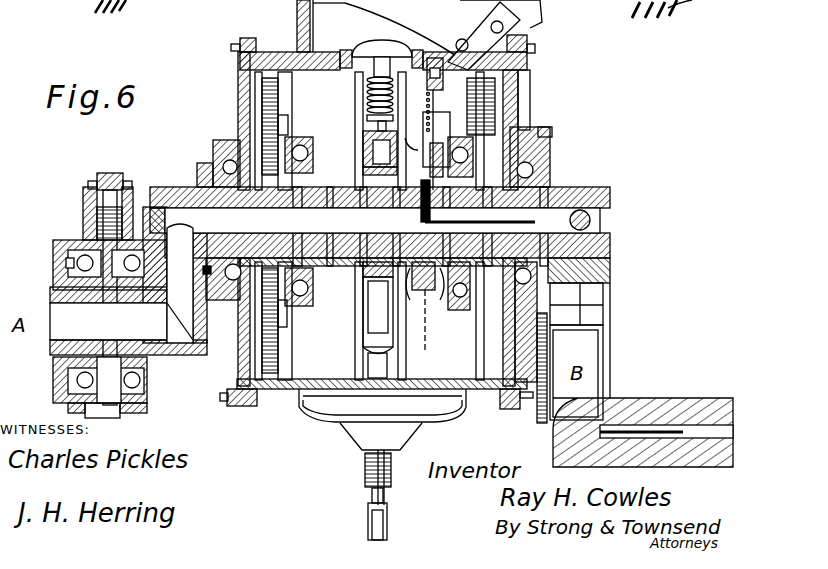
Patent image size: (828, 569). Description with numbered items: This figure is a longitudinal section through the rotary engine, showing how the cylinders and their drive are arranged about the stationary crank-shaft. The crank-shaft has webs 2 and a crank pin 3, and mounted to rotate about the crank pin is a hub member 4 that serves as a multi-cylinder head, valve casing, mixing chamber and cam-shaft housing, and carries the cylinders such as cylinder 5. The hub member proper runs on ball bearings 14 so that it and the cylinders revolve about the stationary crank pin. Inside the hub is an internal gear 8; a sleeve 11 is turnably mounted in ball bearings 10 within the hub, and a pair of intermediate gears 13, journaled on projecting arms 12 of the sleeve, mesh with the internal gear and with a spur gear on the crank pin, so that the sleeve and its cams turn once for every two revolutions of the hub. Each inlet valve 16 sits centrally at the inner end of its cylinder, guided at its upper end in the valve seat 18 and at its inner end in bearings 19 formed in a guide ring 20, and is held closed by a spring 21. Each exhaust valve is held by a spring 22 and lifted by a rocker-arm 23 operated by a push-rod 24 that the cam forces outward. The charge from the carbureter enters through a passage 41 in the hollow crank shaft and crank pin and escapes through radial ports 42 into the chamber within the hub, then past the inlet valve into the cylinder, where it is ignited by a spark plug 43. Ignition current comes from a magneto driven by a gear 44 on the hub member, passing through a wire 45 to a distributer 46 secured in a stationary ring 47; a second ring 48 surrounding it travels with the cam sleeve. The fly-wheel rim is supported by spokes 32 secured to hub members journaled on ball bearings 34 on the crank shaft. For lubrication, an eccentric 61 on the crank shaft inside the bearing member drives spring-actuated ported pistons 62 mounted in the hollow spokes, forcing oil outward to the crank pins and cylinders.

The webs of the shaft 2 is at (195, 358).
The crank pin 3 is at (197, 172).
The hub member 4 is at (240, 103).
The cylinder 5 is at (445, 120).
The internal gear 8 is at (245, 73).
The ball bearings 10 is at (312, 148).
The sleeve 11 is at (355, 170).
The projecting arms 12 is at (284, 125).
The intermediate gears 13 is at (278, 100).
The ball bearings 14 is at (230, 142).
The inlet valve 16 is at (382, 50).
The valve seat 18 is at (346, 52).
The bearings 19 is at (417, 112).
The guide ring 20 is at (365, 140).
The spring 21 is at (368, 104).
The spring 22 is at (389, 470).
The rocker-arm 23 is at (528, 20).
The push-rod 24 is at (372, 500).
The spokes 32 is at (122, 412).
The ball bearings 34 is at (55, 271).
The passage 41 is at (160, 283).
The ports 42 is at (268, 214).
The spark plug 43 is at (434, 56).
The gear 44 is at (540, 150).
The wire 45 is at (455, 205).
The distributer 46 is at (412, 136).
The stationary ring 47 is at (425, 293).
The second ring 48 is at (418, 292).
The eccentric 61 is at (128, 353).
The spring-actuated ported pistons 62 is at (85, 238).